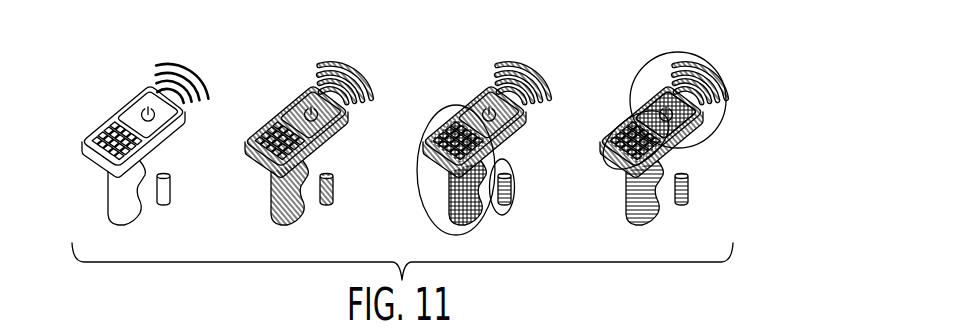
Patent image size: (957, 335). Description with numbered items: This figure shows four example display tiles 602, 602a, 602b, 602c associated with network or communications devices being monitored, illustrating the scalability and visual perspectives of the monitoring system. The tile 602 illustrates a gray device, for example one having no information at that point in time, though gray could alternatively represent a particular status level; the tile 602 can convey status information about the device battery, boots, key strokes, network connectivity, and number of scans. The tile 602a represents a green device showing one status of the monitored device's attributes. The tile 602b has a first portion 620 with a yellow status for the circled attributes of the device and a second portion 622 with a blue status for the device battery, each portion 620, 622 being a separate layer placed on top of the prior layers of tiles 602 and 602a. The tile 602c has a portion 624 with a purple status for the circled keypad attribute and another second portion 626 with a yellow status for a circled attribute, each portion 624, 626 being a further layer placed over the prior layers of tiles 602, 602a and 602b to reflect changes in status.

The tile 602 is at (112, 214).
The tile 602a is at (291, 102).
The tile 602b is at (467, 103).
The tile 602c is at (699, 117).
The first portion 620 is at (476, 222).
The second portion 622 is at (514, 195).
The portion 624 is at (664, 152).
The second portion 626 is at (696, 56).